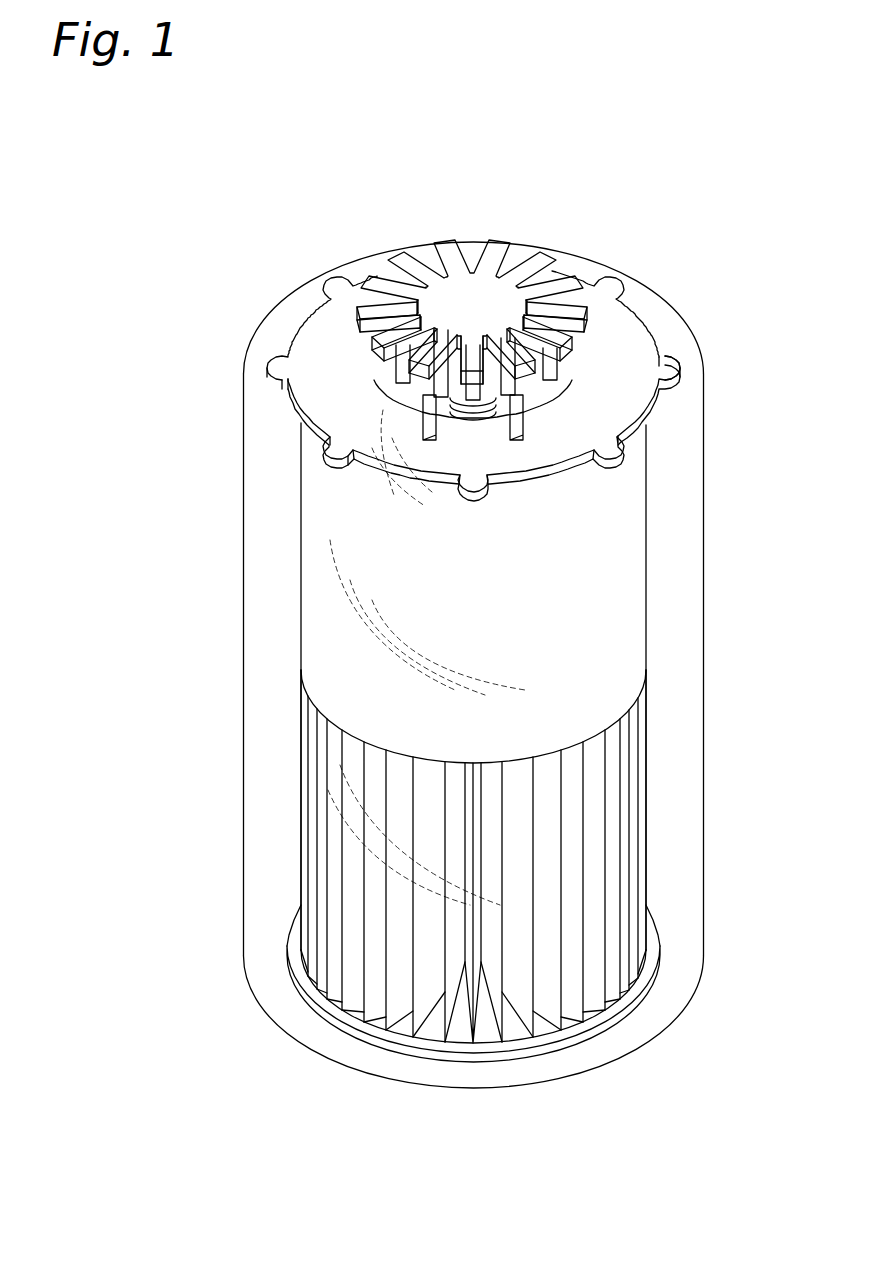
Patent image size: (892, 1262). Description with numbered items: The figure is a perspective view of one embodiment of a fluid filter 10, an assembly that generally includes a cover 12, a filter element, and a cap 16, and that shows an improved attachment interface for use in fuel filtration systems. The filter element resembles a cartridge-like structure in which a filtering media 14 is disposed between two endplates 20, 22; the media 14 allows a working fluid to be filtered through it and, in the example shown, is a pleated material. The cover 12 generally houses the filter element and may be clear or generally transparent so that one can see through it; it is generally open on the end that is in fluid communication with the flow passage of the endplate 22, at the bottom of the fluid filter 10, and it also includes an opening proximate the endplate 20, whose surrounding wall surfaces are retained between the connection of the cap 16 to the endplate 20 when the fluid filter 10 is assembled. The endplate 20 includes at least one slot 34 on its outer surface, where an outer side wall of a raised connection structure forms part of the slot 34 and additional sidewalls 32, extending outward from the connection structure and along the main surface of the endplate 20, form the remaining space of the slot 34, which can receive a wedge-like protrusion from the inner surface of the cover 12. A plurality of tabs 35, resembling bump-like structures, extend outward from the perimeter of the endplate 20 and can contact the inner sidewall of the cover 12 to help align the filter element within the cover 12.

The fluid filter 10 is at (212, 282).
The cover 12 is at (243, 550).
The filtering media 14 is at (645, 822).
The cap 16 is at (548, 268).
The endplate 20 is at (643, 332).
The endplate 22 is at (648, 995).
The sidewalls 32 is at (528, 440).
The slot 34 is at (485, 423).
The tabs 35 is at (672, 392).